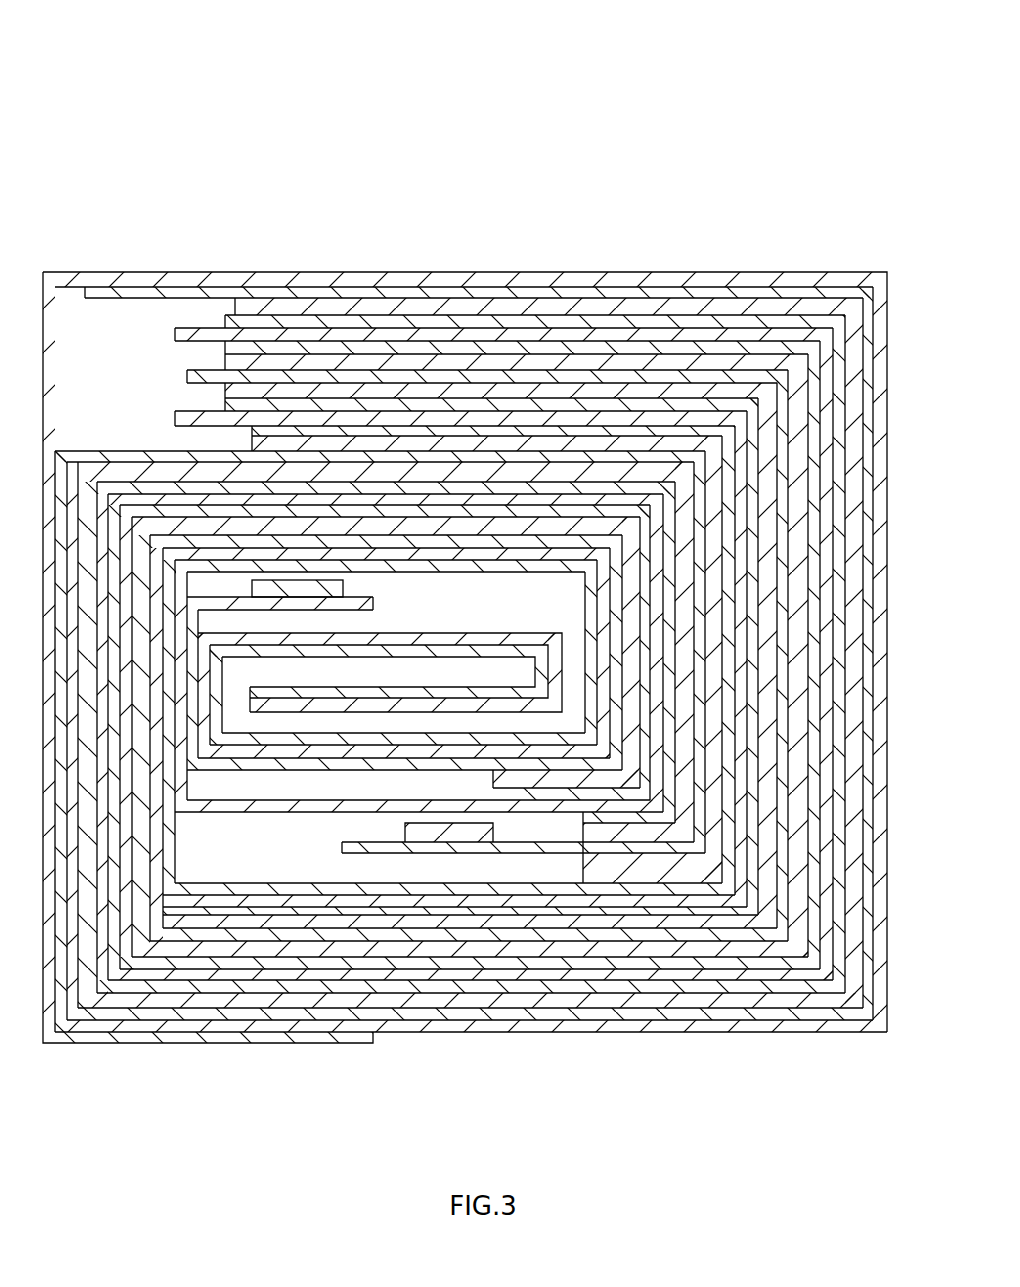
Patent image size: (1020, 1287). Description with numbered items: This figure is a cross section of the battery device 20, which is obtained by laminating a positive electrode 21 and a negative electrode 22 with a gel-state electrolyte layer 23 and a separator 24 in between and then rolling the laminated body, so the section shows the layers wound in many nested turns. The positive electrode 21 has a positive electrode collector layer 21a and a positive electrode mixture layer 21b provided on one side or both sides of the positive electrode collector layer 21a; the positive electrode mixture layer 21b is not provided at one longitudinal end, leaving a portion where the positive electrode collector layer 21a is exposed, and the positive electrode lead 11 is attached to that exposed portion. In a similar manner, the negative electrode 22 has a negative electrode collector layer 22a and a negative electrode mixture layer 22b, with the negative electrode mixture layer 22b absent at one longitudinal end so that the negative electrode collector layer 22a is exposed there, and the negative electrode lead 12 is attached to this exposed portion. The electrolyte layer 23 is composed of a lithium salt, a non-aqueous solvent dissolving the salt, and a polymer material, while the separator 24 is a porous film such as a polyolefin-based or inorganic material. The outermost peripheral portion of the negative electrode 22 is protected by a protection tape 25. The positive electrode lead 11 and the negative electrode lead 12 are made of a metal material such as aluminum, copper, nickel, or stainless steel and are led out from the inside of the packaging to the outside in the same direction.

The battery device 20 is at (780, 82).
The positive electrode 21 is at (390, 135).
The positive electrode collector layer 21a is at (427, 370).
The positive electrode mixture layer 21b is at (527, 392).
The negative electrode 22 is at (165, 135).
The negative electrode collector layer 22a is at (203, 297).
The negative electrode mixture layer 22b is at (288, 437).
The electrolyte layer 23 is at (655, 425).
The separator 24 is at (727, 422).
The protection tape 25 is at (85, 280).
The positive electrode lead 11 is at (290, 592).
The negative electrode lead 12 is at (445, 835).